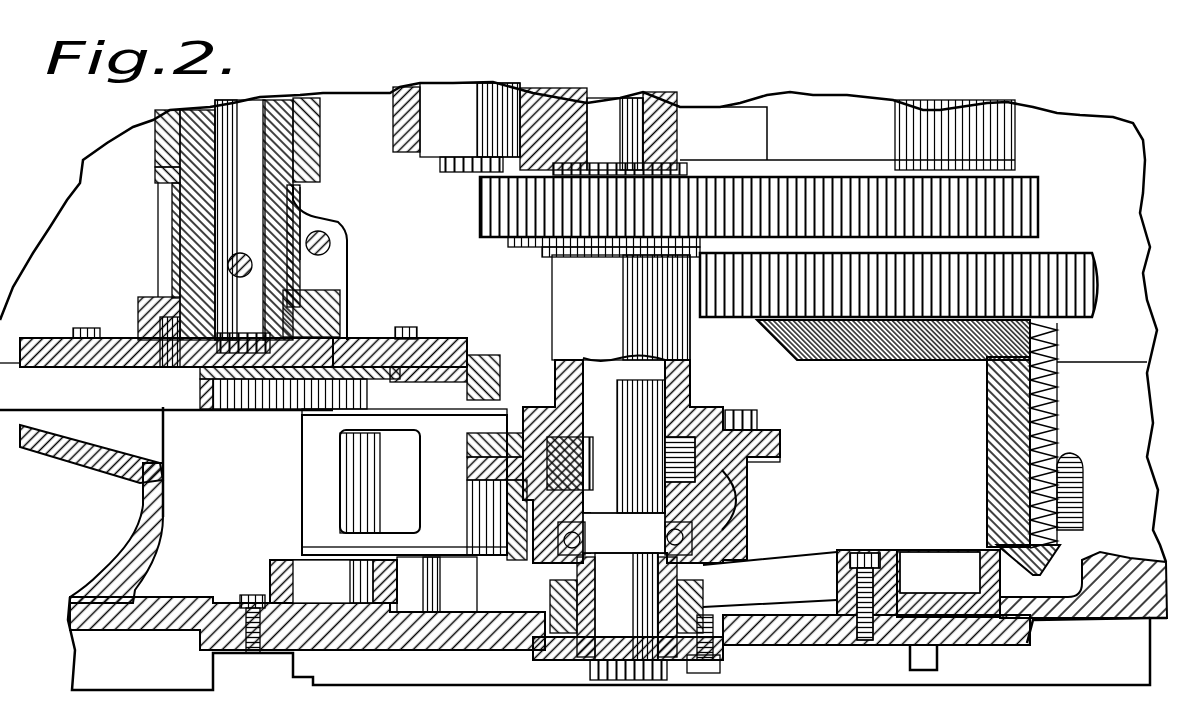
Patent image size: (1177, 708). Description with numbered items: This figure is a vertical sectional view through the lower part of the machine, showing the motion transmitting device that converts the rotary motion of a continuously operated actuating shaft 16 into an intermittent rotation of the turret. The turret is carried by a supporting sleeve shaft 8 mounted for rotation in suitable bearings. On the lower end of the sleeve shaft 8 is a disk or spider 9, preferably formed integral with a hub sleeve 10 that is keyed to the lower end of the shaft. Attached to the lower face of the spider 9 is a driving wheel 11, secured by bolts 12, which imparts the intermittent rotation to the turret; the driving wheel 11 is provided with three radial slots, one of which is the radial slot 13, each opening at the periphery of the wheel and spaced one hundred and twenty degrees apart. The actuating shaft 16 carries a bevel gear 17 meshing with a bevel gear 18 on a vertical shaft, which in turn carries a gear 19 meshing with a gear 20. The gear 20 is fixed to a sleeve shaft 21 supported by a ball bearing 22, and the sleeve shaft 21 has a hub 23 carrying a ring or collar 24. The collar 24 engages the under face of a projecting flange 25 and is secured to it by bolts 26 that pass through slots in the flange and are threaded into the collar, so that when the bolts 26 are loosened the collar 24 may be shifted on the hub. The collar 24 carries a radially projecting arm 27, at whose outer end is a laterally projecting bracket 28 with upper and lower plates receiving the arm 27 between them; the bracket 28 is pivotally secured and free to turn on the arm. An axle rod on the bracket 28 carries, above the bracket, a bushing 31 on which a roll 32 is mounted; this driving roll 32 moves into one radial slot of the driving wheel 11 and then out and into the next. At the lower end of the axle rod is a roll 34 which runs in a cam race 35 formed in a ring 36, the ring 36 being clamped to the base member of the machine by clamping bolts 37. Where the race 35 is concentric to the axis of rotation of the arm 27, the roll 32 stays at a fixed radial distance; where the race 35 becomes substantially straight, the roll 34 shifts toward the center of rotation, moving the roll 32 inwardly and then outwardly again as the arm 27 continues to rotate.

The supporting sleeve shaft 8 is at (300, 200).
The disk or spider 9 is at (352, 345).
The hub sleeve 10 is at (180, 212).
The driving wheel 11 is at (480, 360).
The bolts 12 is at (405, 328).
The radial slot 13 is at (166, 366).
The actuating shaft 16 is at (1086, 474).
The bevel gear 17 is at (985, 423).
The bevel gear 18 is at (885, 356).
The gear 19 is at (1030, 205).
The gear 20 is at (705, 190).
The sleeve shaft 21 is at (695, 382).
The ball bearing 22 is at (760, 497).
The hub 23 is at (780, 463).
The ring or collar 24 is at (715, 505).
The projecting flange 25 is at (780, 437).
The bolts 26 is at (750, 413).
The radially projecting arm 27 is at (481, 496).
The laterally projecting bracket 28 is at (371, 482).
The bushing 31 is at (250, 595).
The roll 32 is at (343, 430).
The roll 34 is at (327, 573).
The cam race 35 is at (935, 580).
The ring 36 is at (850, 578).
The clamping bolts 37 is at (865, 560).